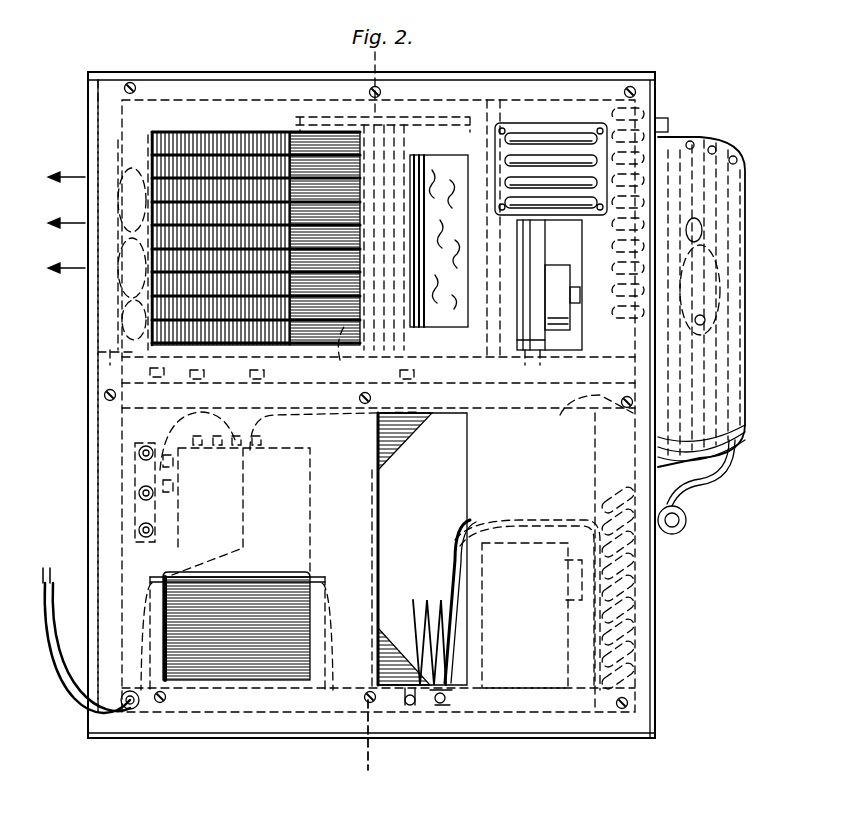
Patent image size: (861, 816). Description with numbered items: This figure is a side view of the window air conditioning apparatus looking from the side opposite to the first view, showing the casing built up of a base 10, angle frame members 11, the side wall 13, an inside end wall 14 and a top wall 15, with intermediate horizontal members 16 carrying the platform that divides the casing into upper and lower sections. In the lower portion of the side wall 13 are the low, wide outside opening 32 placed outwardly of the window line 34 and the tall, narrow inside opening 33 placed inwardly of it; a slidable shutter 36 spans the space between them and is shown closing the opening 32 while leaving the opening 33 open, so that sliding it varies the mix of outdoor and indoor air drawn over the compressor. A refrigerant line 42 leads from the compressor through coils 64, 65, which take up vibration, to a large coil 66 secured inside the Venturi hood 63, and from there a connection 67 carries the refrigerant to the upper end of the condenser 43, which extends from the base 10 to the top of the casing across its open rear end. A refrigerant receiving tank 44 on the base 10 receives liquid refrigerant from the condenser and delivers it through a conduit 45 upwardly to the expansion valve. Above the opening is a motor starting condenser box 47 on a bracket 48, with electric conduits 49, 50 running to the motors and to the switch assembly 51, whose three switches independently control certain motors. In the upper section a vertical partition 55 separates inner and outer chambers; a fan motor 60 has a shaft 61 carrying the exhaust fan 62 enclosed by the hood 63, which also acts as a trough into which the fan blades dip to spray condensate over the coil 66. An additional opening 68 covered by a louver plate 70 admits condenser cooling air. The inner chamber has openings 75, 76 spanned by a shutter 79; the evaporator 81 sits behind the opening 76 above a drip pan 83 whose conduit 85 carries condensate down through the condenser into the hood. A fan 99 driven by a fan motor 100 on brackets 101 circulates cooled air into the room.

The base 10 is at (268, 722).
The angle frame members 11 is at (100, 428).
The side wall 13 is at (88, 560).
The inside end wall 14 is at (92, 378).
The top wall 15 is at (200, 72).
The intermediate horizontal members 16 is at (493, 415).
The outside opening 32 is at (300, 582).
The inside opening 33 is at (465, 520).
The window line 34 is at (368, 740).
The slidable shutter 36 is at (395, 435).
The refrigerant line 42 is at (702, 480).
The condenser 43 is at (615, 110).
The refrigerant receiving tank 44 is at (550, 560).
The conduit 45 is at (445, 708).
The motor starting condenser box 47 is at (290, 512).
The bracket 48 is at (150, 605).
The electric conduit 49 is at (265, 420).
The electric conduit 50 is at (198, 420).
The switch assembly 51 is at (135, 466).
The vertical partition 55 is at (440, 170).
The fan motor 60 is at (540, 250).
The shaft 61 is at (576, 290).
The exhaust fan 62 is at (720, 330).
The Venturi hood 63 is at (722, 160).
The coil 64 is at (418, 612).
The coil 65 is at (690, 525).
The large coil 66 is at (712, 146).
The connection 67 is at (668, 115).
The opening 68 is at (545, 350).
The louver plate 70 is at (540, 140).
The opening 75 is at (440, 330).
The opening 76 is at (347, 330).
The shutter 79 is at (292, 130).
The evaporator 81 is at (245, 135).
The drip pan 83 is at (96, 355).
The conduit 85 is at (600, 405).
The fan 99 is at (110, 283).
The fan motor 100 is at (262, 100).
The brackets 101 is at (282, 373).